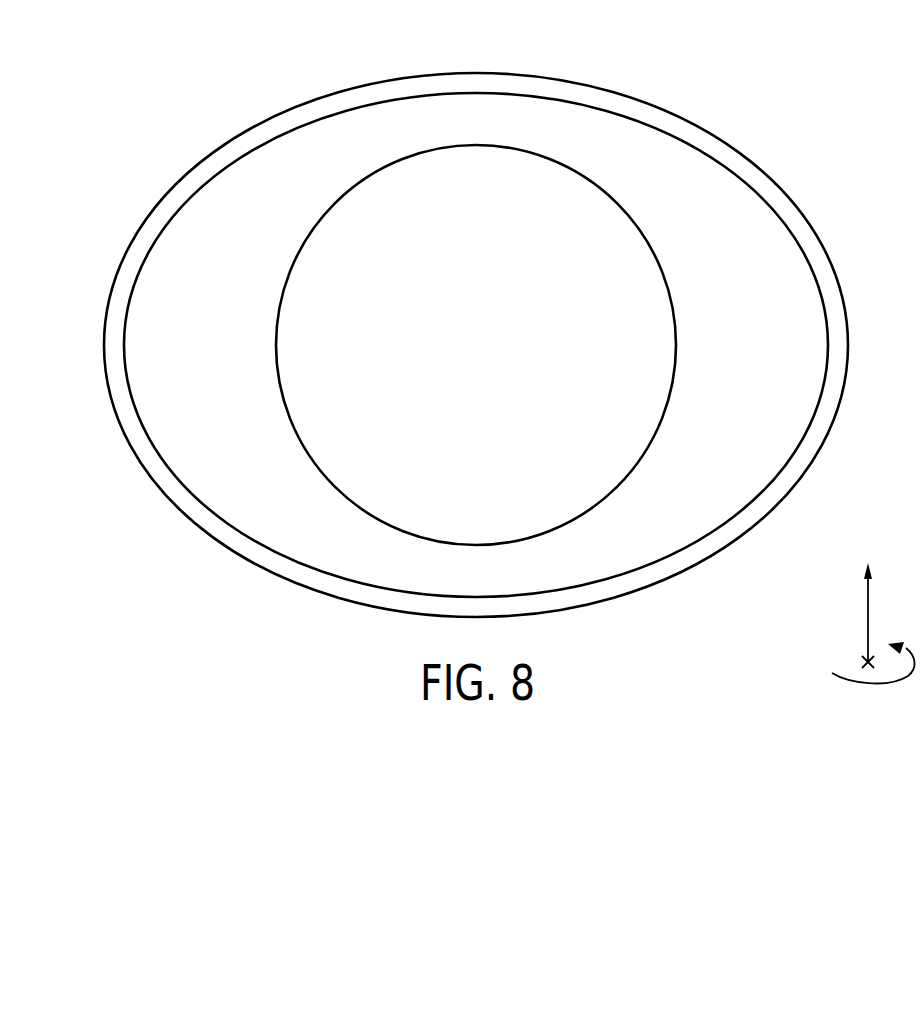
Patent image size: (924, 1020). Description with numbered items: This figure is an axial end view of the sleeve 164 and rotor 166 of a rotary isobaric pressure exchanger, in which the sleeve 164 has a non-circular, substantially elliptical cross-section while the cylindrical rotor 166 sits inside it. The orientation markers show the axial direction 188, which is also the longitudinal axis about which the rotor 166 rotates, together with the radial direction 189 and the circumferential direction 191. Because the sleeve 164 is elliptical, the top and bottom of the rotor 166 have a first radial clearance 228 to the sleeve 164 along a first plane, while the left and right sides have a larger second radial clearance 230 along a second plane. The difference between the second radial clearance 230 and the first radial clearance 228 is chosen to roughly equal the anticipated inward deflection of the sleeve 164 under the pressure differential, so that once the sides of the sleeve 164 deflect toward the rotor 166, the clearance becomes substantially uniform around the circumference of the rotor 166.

The sleeve 164 is at (722, 140).
The rotor 166 is at (670, 288).
The first radial clearance 228 is at (477, 94).
The second radial clearance 230 is at (276, 344).
The axial direction 188 is at (862, 664).
The radial direction 189 is at (868, 617).
The circumferential direction 191 is at (858, 681).